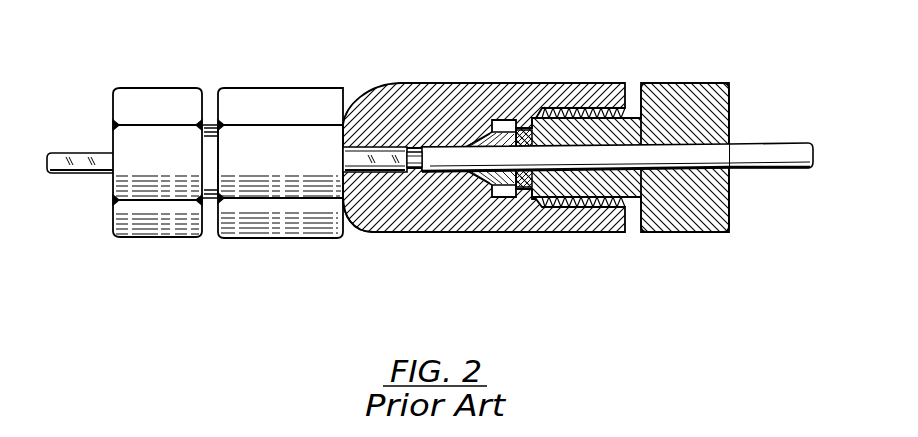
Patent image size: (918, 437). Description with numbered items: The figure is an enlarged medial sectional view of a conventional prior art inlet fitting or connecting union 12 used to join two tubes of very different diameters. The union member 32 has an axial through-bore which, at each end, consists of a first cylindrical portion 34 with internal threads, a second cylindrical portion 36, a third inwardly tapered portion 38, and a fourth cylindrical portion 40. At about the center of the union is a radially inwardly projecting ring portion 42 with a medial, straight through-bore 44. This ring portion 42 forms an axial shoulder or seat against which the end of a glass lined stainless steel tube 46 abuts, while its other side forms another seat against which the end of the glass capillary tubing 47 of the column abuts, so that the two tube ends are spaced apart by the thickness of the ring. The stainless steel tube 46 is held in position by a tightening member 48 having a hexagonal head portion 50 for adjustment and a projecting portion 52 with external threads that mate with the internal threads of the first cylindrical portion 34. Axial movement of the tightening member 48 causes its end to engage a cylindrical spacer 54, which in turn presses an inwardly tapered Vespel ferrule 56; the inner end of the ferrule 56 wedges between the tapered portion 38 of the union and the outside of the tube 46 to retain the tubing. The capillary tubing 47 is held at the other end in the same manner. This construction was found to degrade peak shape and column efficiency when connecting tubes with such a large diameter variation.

The prior art compression fitting 12 is at (316, 72).
The union member 32 is at (428, 93).
The first cylindrical portion 34 is at (600, 204).
The second cylindrical portion 36 is at (523, 197).
The third inwardly tapered portion 38 is at (490, 188).
The fourth cylindrical portion 40 is at (437, 163).
The ring portion 42 is at (412, 148).
The through-bore 44 is at (372, 216).
The glass lined stainless steel tube 46 is at (789, 168).
The glass capillary tubing 47 is at (343, 160).
The tightening member 48 is at (146, 110).
The hexagonal head portion 50 is at (683, 83).
The projecting portion 52 is at (595, 133).
The cylindrical spacer 54 is at (527, 133).
The Vespel ferrule 56 is at (488, 137).